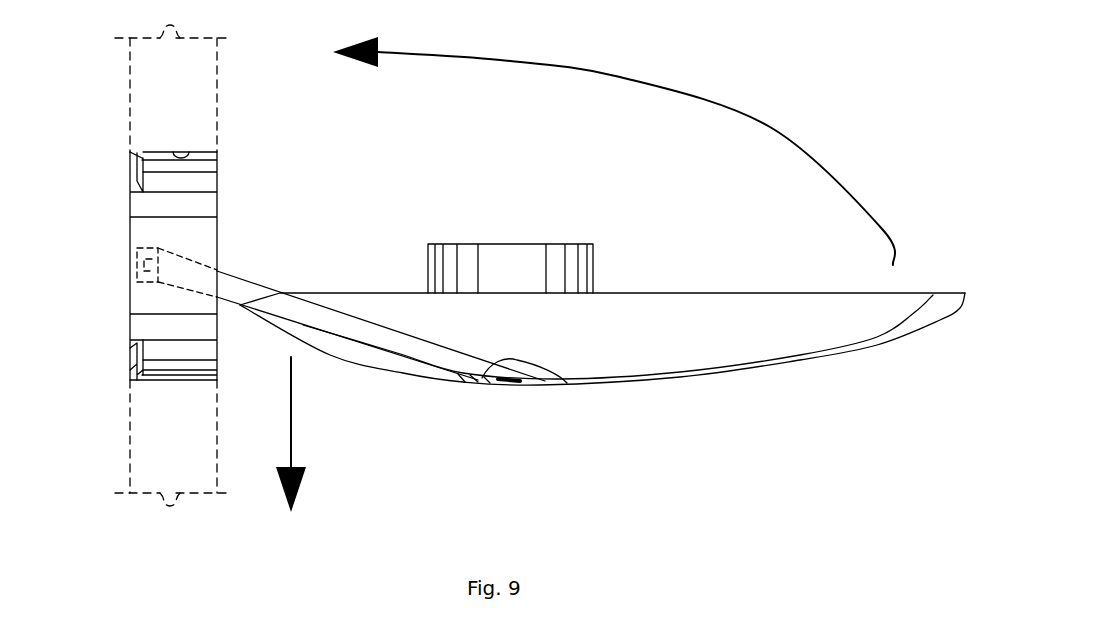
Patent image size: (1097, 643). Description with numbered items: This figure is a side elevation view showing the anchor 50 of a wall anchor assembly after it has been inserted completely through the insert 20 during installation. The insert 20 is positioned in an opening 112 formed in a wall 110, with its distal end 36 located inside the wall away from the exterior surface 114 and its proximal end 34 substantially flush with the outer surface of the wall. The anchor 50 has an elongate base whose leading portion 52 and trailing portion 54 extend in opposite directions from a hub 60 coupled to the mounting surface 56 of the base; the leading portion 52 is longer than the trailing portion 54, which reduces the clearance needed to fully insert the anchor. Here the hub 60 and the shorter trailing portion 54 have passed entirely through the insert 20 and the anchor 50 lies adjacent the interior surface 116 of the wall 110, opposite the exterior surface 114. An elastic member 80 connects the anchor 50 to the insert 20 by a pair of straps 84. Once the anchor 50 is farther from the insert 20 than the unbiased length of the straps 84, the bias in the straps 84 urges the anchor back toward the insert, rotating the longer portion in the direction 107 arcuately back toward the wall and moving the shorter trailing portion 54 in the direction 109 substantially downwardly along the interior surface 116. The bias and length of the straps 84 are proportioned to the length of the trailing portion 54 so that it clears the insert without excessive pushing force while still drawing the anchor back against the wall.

The insert 20 is at (141, 266).
The proximal end 34 is at (130, 300).
The distal end 36 is at (217, 200).
The anchor 50 is at (602, 331).
The leading portion 52 is at (738, 368).
The trailing portion 54 is at (355, 300).
The mounting surface 56 is at (710, 292).
The hub 60 is at (595, 263).
The elastic member 80 is at (535, 386).
The straps 84 is at (397, 350).
The direction 107 is at (770, 127).
The direction 109 is at (291, 445).
The wall 110 is at (217, 85).
The opening 112 is at (167, 155).
The exterior surface 114 is at (130, 92).
The interior surface 116 is at (217, 125).